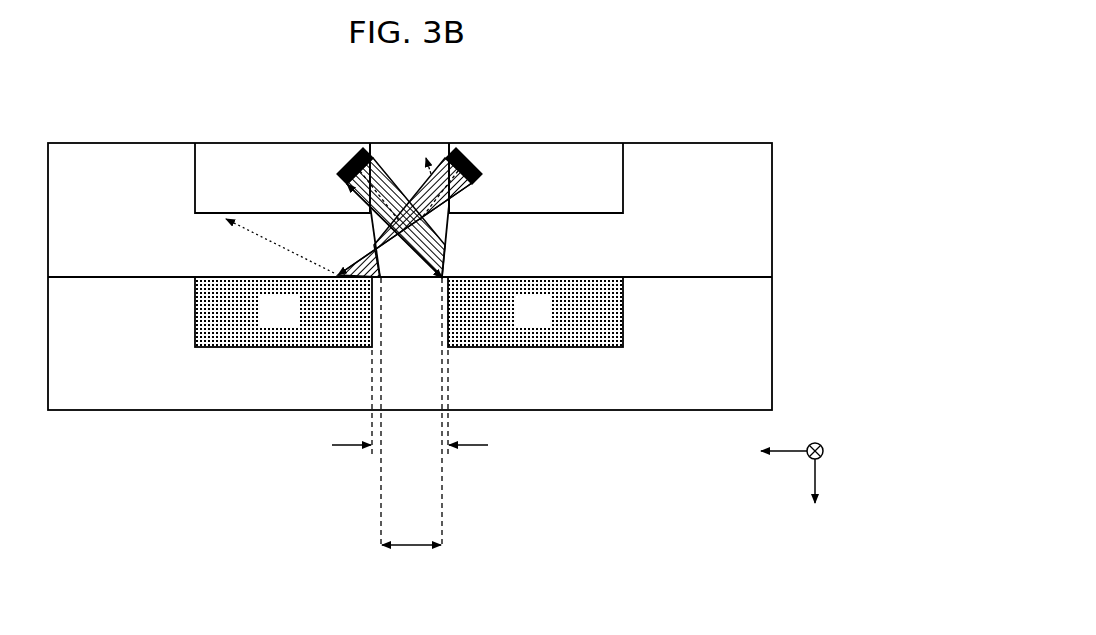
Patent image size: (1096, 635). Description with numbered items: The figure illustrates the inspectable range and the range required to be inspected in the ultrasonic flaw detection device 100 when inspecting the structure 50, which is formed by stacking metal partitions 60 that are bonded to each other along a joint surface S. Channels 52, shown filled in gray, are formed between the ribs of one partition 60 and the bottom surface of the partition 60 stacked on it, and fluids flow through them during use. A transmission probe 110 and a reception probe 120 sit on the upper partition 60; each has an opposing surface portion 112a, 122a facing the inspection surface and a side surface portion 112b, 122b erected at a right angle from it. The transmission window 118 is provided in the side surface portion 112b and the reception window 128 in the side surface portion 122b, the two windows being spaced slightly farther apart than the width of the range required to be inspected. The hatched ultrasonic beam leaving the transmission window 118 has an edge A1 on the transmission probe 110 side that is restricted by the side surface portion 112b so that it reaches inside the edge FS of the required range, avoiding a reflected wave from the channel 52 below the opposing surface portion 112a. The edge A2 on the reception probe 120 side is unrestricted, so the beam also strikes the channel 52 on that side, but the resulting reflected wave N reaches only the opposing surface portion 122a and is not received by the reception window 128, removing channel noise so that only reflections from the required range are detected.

The ultrasonic flaw detection device 100 is at (151, 101).
The structure 50 is at (843, 213).
The partition 60 is at (773, 208).
The channel 52 is at (295, 321).
The transmission probe 110 is at (585, 153).
The reception probe 120 is at (228, 154).
The opposing surface portion 112a is at (609, 215).
The opposing surface portion 122a is at (212, 214).
The side surface portion 112b is at (448, 142).
The side surface portion 122b is at (371, 142).
The transmission window 118 is at (443, 158).
The reception window 128 is at (376, 158).
The edge on the transmission probe side of the ultrasonic beam A1 is at (447, 231).
The edge on the reception probe side of the ultrasonic beam A2 is at (372, 244).
The edge on the transmission probe side of the range required to be inspected FS is at (446, 276).
The reflected wave N is at (267, 243).
The joint surface S is at (412, 413).